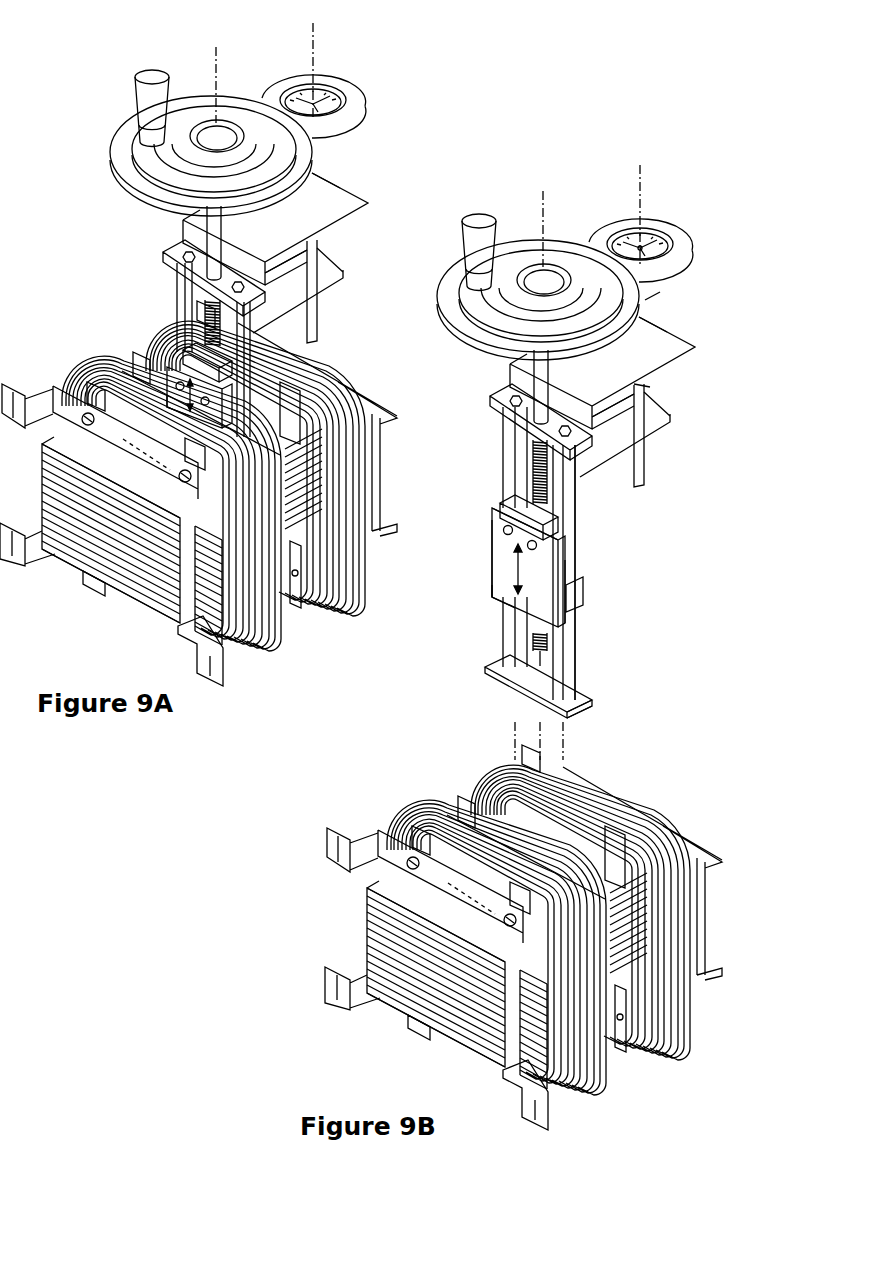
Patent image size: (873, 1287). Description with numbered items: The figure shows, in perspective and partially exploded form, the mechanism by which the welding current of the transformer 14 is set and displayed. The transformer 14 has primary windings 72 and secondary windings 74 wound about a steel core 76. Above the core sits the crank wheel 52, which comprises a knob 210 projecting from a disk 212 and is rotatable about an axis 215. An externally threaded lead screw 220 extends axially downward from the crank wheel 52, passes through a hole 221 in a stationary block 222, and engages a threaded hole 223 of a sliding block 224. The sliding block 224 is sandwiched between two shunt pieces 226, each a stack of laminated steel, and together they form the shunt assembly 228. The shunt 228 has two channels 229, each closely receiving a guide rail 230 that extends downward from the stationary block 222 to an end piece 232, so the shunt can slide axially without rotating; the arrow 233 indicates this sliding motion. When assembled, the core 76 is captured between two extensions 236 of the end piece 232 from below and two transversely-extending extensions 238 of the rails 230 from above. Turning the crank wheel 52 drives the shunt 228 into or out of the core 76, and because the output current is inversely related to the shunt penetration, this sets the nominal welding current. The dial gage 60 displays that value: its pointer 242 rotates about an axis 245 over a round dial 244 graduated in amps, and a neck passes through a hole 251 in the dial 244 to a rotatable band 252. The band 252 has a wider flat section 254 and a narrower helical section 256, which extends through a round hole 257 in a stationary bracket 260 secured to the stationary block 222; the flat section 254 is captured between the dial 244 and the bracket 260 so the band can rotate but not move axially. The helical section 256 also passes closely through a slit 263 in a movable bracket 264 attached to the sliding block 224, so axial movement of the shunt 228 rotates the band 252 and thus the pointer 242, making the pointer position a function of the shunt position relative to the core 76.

In FIG. 9A, the transformer 14 is at (215, 494).
In FIG. 9B, the transformer 14 is at (539, 937).
In FIG. 9A, the crank wheel 52 is at (140, 144).
In FIG. 9B, the crank wheel 52 is at (483, 307).
In FIG. 9A, the dial gage 60 is at (334, 72).
In FIG. 9B, the dial gage 60 is at (665, 222).
In FIG. 9A, the primary windings 72 is at (352, 585).
In FIG. 9B, the primary windings 72 is at (670, 1023).
In FIG. 9A, the secondary windings 74 is at (260, 630).
In FIG. 9B, the secondary windings 74 is at (583, 1070).
In FIG. 9A, the steel core 76 is at (152, 605).
In FIG. 9B, the steel core 76 is at (485, 1050).
In FIG. 9A, the knob 210 is at (150, 70).
In FIG. 9B, the knob 210 is at (480, 215).
In FIG. 9A, the disk 212 is at (190, 115).
In FIG. 9B, the disk 212 is at (527, 255).
In FIG. 9A, the axis 215 is at (218, 77).
In FIG. 9B, the axis 215 is at (545, 191).
In FIG. 9A, the lead screw 220 is at (186, 293).
In FIG. 9B, the lead screw 220 is at (533, 463).
In FIG. 9B, the hole 221 is at (527, 412).
In FIG. 9A, the stationary block 222 is at (165, 266).
In FIG. 9B, the stationary block 222 is at (510, 407).
In FIG. 9B, the threaded hole 223 is at (527, 495).
In FIG. 9B, the sliding block 224 is at (523, 510).
In FIG. 9B, the shunt pieces 226 is at (497, 570).
In FIG. 9A, the shunt assembly 228 is at (160, 347).
In FIG. 9B, the shunt assembly 228 is at (503, 568).
In FIG. 9B, the channels 229 is at (585, 541).
In FIG. 9A, the guide rails 230 is at (183, 313).
In FIG. 9B, the guide rails 230 is at (510, 642).
In FIG. 9B, the end piece 232 is at (528, 693).
In FIG. 9A, the arrow 233 is at (152, 368).
In FIG. 9B, the arrow 233 is at (510, 585).
In FIG. 9B, the extensions 236 is at (578, 714).
In FIG. 9B, the transversely-extending extensions 238 is at (588, 595).
In FIG. 9B, the pointer 242 is at (645, 243).
In FIG. 9B, the dial 244 is at (677, 240).
In FIG. 9A, the axis 245 is at (316, 38).
In FIG. 9B, the axis 245 is at (646, 160).
In FIG. 9B, the hole 251 is at (647, 246).
In FIG. 9A, the band 252 is at (320, 323).
In FIG. 9B, the band 252 is at (647, 472).
In FIG. 9B, the flat section 254 is at (653, 317).
In FIG. 9B, the helical section 256 is at (650, 387).
In FIG. 9A, the round hole 257 is at (330, 181).
In FIG. 9B, the round hole 257 is at (663, 330).
In FIG. 9A, the stationary bracket 260 is at (342, 217).
In FIG. 9B, the stationary bracket 260 is at (667, 357).
In FIG. 9A, the slit 263 is at (333, 273).
In FIG. 9B, the slit 263 is at (663, 413).
In FIG. 9A, the movable bracket 264 is at (329, 286).
In FIG. 9B, the movable bracket 264 is at (677, 427).